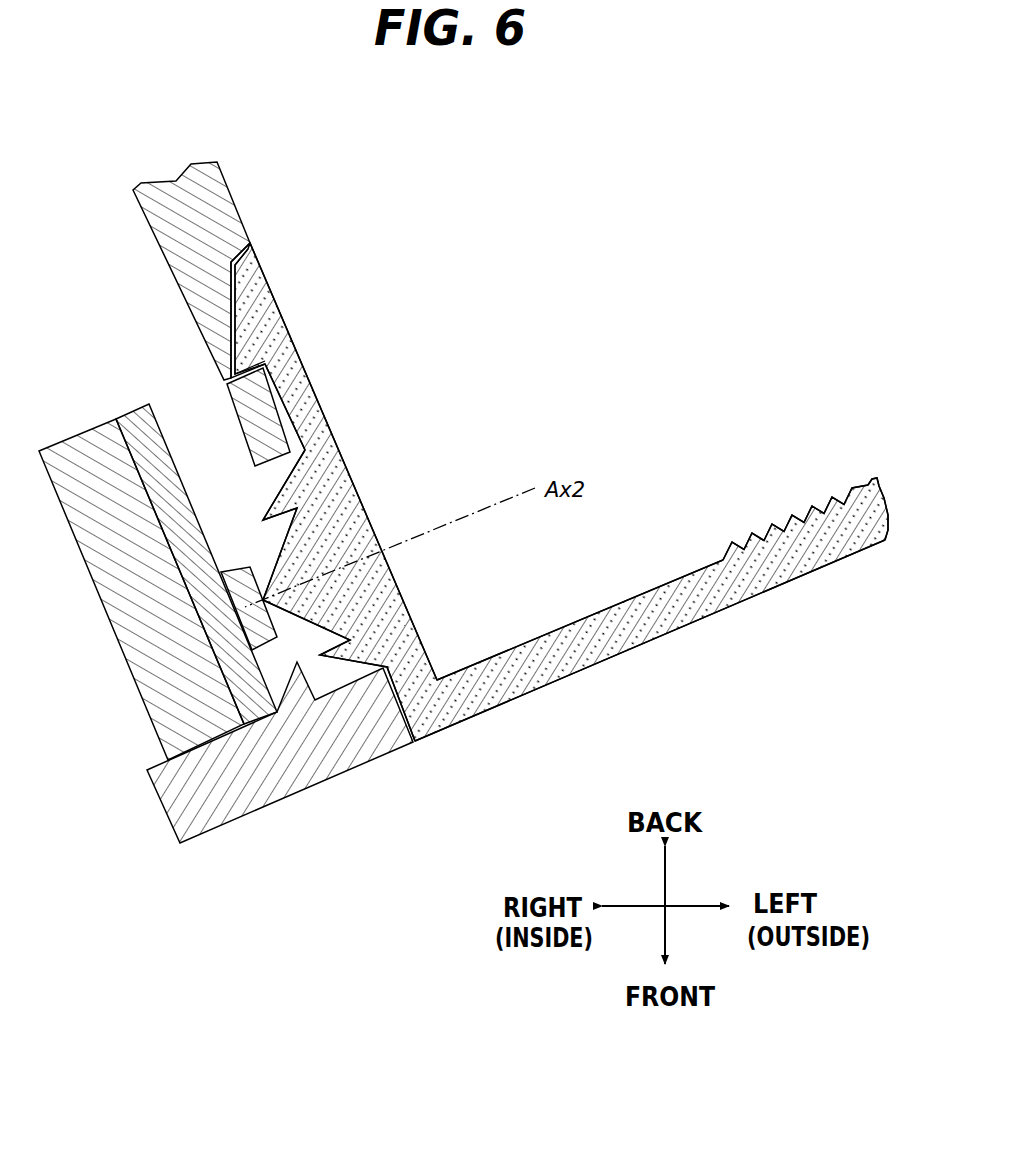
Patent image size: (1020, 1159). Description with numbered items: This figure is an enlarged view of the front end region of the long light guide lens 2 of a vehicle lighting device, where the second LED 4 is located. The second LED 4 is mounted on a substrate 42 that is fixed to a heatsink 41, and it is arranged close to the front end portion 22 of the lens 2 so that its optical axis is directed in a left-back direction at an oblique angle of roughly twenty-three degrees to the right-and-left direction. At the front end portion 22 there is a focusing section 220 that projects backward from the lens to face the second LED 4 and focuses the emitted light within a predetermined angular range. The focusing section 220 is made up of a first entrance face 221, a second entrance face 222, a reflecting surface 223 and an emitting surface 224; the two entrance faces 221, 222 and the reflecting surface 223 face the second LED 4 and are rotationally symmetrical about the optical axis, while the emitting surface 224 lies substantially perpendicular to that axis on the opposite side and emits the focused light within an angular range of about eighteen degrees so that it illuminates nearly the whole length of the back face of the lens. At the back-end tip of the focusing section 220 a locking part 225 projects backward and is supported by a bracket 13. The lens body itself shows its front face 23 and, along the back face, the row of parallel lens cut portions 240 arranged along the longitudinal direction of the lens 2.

The light guide lens 2 is at (541, 527).
The second LED 4 is at (158, 598).
The bracket 13 is at (224, 178).
The front end portion 22 is at (533, 695).
The front face 23 is at (750, 604).
The heatsink 41 is at (182, 660).
The substrate 42 is at (155, 458).
The focusing section 220 is at (356, 527).
The first entrance face 221 is at (298, 700).
The second entrance face 222 is at (262, 528).
The reflecting surface 223 is at (357, 650).
The emitting surface 224 is at (348, 472).
The locking part 225 is at (236, 294).
The lens cut portions 240 is at (833, 497).